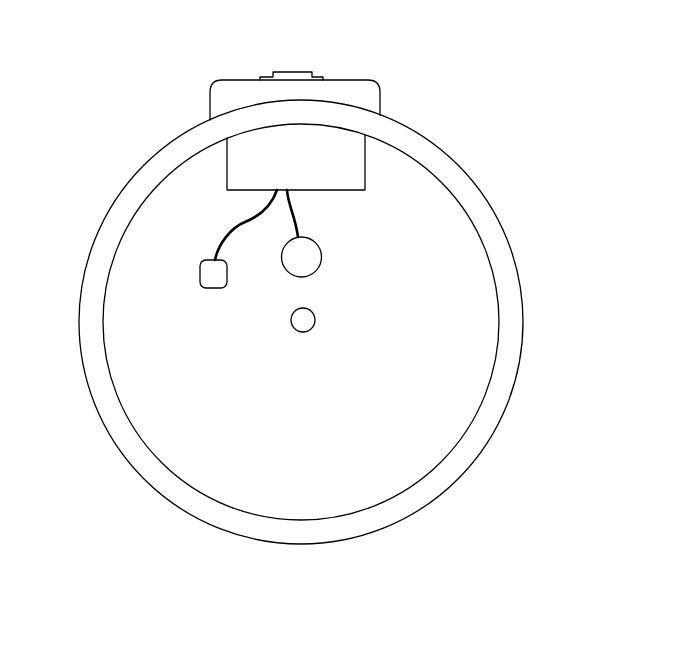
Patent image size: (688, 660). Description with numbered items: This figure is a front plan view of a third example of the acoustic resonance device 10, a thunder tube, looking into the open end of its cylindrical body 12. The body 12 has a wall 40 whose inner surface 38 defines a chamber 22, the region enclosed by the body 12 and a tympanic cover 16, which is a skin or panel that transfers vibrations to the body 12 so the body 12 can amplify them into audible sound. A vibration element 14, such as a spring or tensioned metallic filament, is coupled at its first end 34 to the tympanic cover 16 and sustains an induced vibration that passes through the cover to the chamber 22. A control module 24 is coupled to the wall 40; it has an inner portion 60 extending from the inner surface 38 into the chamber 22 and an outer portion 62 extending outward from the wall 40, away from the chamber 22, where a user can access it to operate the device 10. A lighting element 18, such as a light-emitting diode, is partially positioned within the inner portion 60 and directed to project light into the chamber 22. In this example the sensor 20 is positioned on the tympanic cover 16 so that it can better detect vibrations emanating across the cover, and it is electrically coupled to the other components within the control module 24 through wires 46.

The acoustic resonance device 10 is at (88, 193).
The body 12 is at (421, 135).
The vibration element 14 is at (321, 334).
The tympanic cover 16 is at (440, 375).
The lighting element 18 is at (321, 267).
The sensor 20 is at (200, 270).
The chamber 22 is at (152, 383).
The control module 24 is at (381, 181).
The first end 34 is at (292, 331).
The inner surface 38 is at (107, 290).
The wall 40 is at (450, 177).
The wires 46 is at (263, 218).
The inner portion 60 is at (227, 185).
The outer portion 62 is at (210, 108).